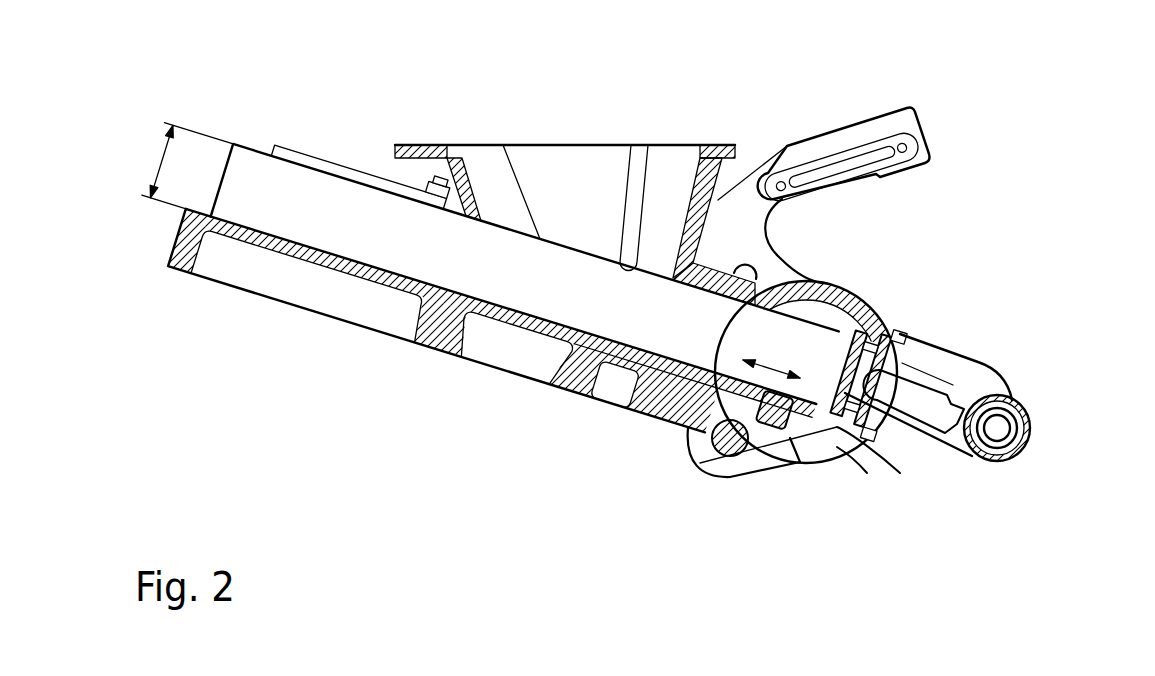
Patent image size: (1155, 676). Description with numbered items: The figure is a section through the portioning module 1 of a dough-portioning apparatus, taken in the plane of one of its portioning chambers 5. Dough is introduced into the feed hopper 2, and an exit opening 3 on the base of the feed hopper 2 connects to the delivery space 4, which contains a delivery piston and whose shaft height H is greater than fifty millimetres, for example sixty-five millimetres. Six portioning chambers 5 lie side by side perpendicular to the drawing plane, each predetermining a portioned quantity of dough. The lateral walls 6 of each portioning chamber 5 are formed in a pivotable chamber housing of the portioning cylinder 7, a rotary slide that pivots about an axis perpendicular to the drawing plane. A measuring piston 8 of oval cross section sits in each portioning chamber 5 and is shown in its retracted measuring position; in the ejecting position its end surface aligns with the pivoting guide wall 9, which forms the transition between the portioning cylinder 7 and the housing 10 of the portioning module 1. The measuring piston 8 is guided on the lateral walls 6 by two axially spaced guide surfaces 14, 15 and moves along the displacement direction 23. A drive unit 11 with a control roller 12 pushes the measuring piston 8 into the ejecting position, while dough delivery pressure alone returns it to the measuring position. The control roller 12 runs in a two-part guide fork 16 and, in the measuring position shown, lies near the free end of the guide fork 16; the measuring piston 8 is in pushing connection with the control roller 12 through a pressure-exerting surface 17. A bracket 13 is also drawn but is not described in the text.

The portioning module 1 is at (535, 88).
The feed hopper 2 is at (423, 147).
The exit opening 3 is at (640, 145).
The delivery space 4 is at (676, 328).
The portioning chamber 5 is at (774, 361).
The lateral walls 6 is at (790, 407).
The portioning cylinder 7 is at (826, 282).
The measuring piston 8 is at (912, 376).
The pivoting guide wall 9 is at (658, 416).
The housing 10 is at (632, 413).
The drive unit 11 is at (1033, 428).
The control roller 12 is at (1035, 432).
The bracket 13 is at (905, 110).
The guide surface 14 is at (820, 400).
The guide surface 15 is at (860, 417).
The guide fork 16 is at (943, 360).
The pressure-exerting surface 17 is at (957, 407).
The displacement direction 23 is at (763, 400).
The shaft height H is at (180, 170).